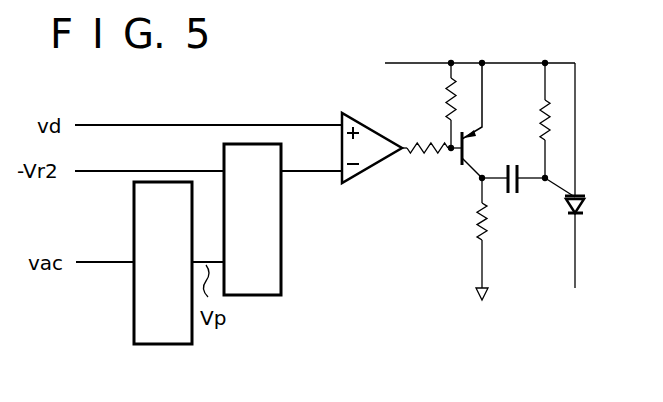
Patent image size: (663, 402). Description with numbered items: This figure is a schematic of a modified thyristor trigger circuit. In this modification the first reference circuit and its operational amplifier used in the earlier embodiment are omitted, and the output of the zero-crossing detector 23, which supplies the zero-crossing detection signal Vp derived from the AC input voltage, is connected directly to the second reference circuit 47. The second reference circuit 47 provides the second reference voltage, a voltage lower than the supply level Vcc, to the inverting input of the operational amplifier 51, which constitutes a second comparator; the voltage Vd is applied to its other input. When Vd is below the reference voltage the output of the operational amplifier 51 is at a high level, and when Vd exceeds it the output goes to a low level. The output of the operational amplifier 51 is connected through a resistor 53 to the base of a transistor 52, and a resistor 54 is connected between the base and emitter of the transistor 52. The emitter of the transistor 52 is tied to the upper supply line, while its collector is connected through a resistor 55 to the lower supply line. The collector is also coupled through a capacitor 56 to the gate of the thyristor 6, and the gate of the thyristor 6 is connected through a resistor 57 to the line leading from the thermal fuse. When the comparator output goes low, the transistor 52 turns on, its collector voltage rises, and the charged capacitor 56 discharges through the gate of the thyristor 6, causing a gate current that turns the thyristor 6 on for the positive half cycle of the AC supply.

The zero-crossing detector 23 is at (167, 345).
The second reference circuit 47 is at (254, 297).
The operational amplifier 51 is at (352, 119).
The transistor 52 is at (478, 148).
The resistor 53 is at (429, 142).
The resistor 54 is at (445, 102).
The resistor 55 is at (468, 168).
The capacitor 56 is at (515, 197).
The resistor 57 is at (535, 112).
The thyristor 6 is at (584, 194).